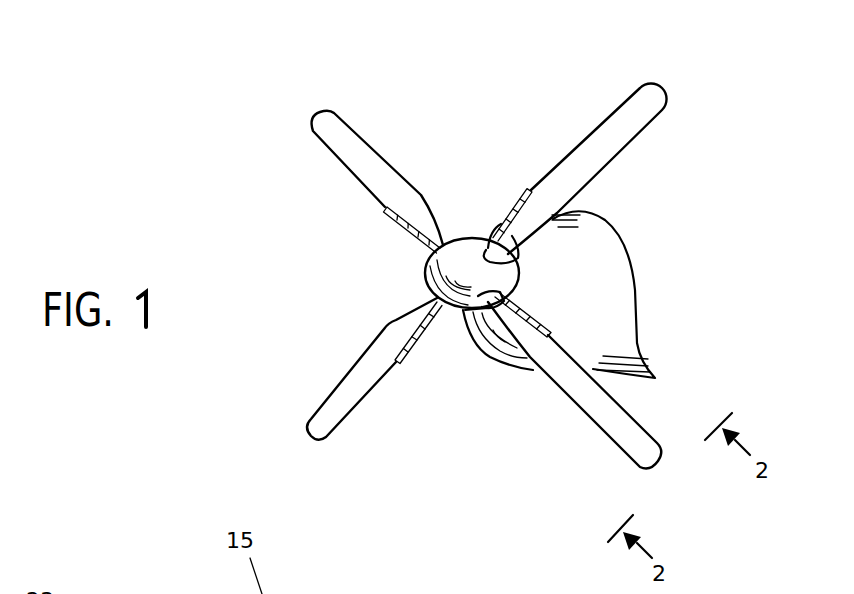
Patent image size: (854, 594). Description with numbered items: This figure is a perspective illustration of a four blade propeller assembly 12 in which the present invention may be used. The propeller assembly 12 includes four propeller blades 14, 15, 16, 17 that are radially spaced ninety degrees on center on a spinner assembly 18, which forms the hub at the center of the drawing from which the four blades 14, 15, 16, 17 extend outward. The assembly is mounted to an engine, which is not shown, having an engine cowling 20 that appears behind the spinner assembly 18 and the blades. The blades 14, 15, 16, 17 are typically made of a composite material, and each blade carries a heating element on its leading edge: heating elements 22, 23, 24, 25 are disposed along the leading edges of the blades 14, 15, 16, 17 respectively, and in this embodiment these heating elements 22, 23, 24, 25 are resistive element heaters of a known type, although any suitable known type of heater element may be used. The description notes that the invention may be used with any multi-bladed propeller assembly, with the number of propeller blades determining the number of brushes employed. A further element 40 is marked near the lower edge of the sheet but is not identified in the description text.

The propeller assembly 12 is at (170, 180).
The propeller blade 14 is at (337, 133).
The propeller blade 15 is at (618, 132).
The propeller blade 16 is at (576, 391).
The propeller blade 17 is at (338, 408).
The spinner assembly 18 is at (442, 269).
The engine cowling 20 is at (595, 259).
The heating element 22 is at (384, 207).
The heating element 23 is at (523, 200).
The heating element 24 is at (547, 335).
The heating element 25 is at (402, 365).
The blade support 40 is at (163, 593).